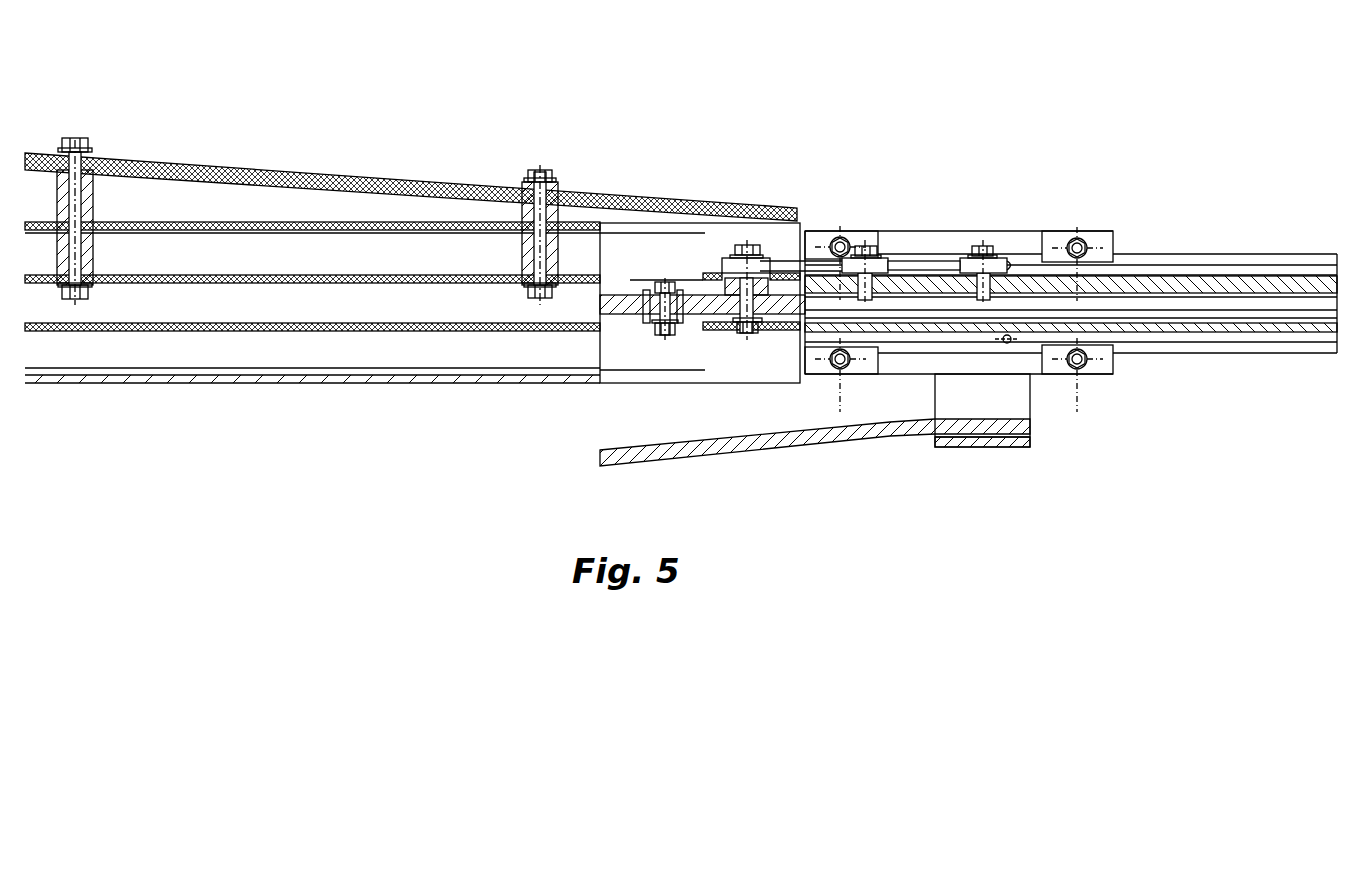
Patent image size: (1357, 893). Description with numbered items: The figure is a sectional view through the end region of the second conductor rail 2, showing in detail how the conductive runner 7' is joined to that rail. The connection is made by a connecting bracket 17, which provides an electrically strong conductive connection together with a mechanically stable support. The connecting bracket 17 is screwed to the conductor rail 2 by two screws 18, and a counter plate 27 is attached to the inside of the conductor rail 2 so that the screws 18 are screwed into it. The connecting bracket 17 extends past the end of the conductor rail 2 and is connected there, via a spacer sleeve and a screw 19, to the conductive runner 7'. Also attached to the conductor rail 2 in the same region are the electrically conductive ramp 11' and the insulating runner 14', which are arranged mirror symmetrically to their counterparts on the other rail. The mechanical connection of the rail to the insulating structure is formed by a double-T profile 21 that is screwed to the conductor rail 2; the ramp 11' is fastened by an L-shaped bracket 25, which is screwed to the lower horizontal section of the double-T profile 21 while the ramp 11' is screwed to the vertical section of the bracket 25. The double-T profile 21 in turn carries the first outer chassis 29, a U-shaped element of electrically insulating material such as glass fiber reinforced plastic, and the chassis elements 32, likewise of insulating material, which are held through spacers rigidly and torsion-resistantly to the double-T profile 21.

The second conductor rail 2 is at (1233, 255).
The conductive runner 7' is at (702, 210).
The ramp 11' is at (411, 129).
The insulating runner 14' is at (815, 480).
The connecting bracket 17 is at (927, 263).
The screws 18 is at (867, 245).
The screw 19 is at (745, 248).
The double-T profile 21 is at (963, 363).
The L-shaped bracket 25 is at (1017, 397).
The counter plate 27 is at (906, 288).
The first outer chassis 29 is at (167, 222).
The chassis elements 32 is at (400, 275).